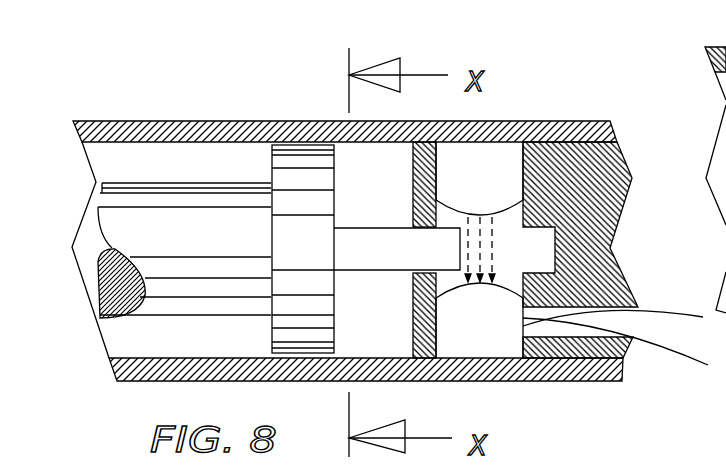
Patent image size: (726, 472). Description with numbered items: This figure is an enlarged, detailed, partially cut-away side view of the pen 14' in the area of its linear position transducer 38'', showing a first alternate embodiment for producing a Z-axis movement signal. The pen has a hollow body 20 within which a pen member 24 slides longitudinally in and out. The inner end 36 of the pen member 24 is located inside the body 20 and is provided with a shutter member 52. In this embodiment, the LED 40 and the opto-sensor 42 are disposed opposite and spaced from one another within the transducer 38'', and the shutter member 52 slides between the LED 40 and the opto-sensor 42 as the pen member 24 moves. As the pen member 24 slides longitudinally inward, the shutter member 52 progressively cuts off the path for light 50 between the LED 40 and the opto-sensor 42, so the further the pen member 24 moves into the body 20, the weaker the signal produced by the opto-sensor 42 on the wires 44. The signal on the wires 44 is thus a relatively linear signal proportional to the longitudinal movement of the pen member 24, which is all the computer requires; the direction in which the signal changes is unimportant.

The body 20 is at (128, 122).
The pen 14' is at (347, 217).
The pen member 24 is at (170, 310).
The inner end 36 is at (260, 175).
The shutter member 52 is at (364, 240).
The linear position transducer 38'' is at (357, 278).
The LED 40 is at (607, 142).
The path for light 50 is at (493, 240).
The opto-sensor 42 is at (505, 292).
The wires 44 is at (664, 314).